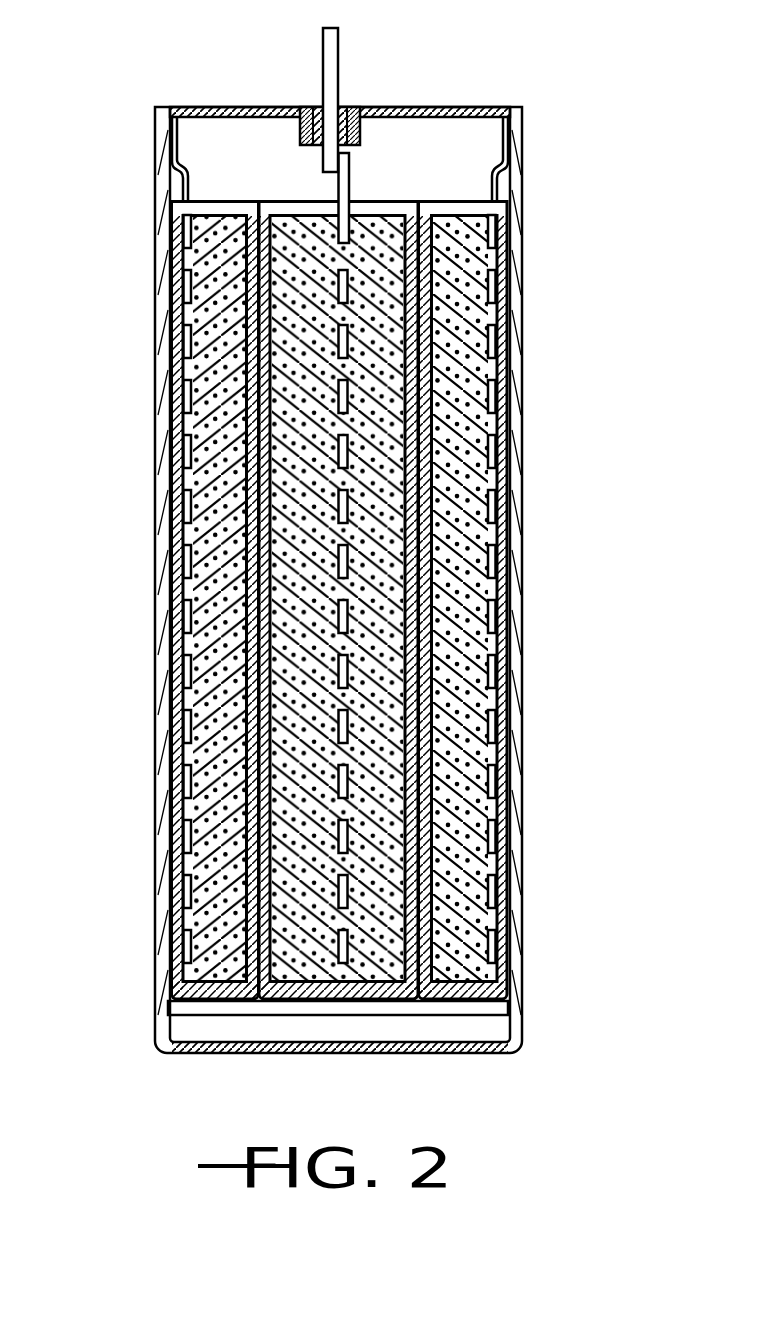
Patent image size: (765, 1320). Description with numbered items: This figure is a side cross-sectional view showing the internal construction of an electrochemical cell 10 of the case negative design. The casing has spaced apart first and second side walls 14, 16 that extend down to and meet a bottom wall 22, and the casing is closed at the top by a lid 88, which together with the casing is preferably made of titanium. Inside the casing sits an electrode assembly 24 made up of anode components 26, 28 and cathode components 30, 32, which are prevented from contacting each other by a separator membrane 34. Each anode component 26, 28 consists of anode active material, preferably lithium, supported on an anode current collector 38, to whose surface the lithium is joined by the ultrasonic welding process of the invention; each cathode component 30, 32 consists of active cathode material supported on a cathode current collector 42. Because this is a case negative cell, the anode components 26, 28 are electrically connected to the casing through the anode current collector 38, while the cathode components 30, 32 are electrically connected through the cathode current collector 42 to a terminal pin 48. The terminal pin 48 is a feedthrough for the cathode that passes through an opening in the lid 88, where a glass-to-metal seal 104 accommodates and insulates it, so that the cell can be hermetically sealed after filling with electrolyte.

The electrochemical cell 10 is at (158, 68).
The first side wall 14 is at (155, 580).
The second side wall 16 is at (522, 510).
The bottom wall 22 is at (335, 1056).
The electrode assembly 24 is at (378, 1015).
The anode component 26 is at (460, 427).
The anode component 28 is at (186, 471).
The cathode component 30 is at (290, 386).
The cathode component 32 is at (400, 325).
The separator membrane 34 is at (418, 604).
The anode current collector 38 is at (186, 284).
The cathode current collector 42 is at (349, 258).
The terminal pin 48 is at (339, 62).
The lid 88 is at (414, 107).
The glass-to-metal seal 104 is at (314, 112).